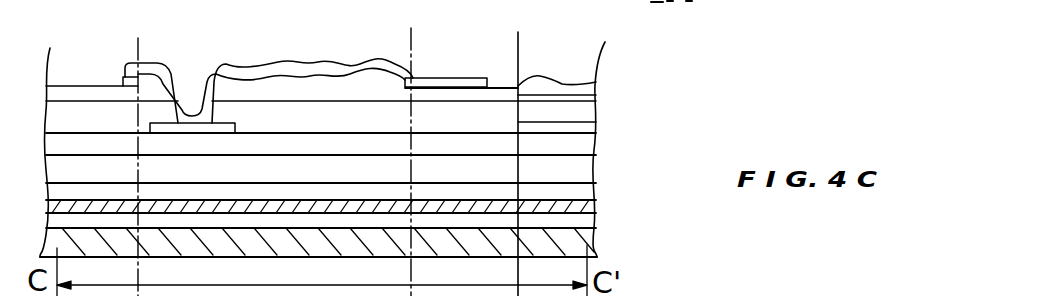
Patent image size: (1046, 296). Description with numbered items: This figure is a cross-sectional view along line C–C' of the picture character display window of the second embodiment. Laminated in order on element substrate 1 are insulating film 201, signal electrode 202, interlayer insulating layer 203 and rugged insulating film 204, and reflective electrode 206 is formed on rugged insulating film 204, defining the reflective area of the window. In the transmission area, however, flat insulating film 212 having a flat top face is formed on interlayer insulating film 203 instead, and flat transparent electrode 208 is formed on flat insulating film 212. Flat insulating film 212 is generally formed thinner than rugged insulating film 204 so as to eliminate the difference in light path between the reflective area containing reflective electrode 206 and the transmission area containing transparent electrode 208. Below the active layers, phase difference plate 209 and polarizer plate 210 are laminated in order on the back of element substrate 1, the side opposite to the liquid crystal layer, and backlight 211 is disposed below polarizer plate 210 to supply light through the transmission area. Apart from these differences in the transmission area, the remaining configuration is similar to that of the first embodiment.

The element substrate 1 is at (593, 174).
The insulating film 201 is at (595, 151).
The signal electrode 202 is at (588, 132).
The interlayer insulating layer 203 is at (584, 112).
The rugged insulating film 204 is at (272, 84).
The reflective electrode 206 is at (365, 40).
The transparent electrode 208 is at (478, 78).
The phase difference plate 209 is at (590, 195).
The polarizer plate 210 is at (588, 210).
The backlight 211 is at (585, 235).
The flat insulating film 212 is at (85, 86).